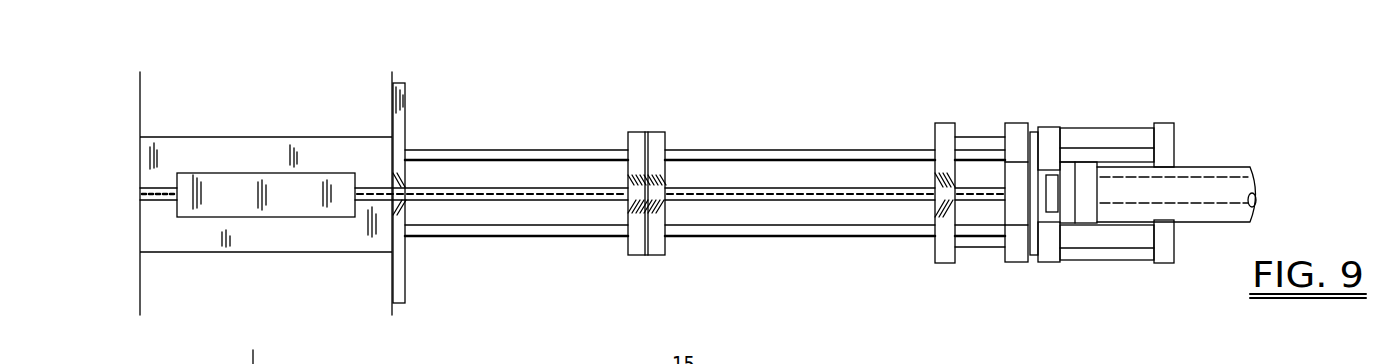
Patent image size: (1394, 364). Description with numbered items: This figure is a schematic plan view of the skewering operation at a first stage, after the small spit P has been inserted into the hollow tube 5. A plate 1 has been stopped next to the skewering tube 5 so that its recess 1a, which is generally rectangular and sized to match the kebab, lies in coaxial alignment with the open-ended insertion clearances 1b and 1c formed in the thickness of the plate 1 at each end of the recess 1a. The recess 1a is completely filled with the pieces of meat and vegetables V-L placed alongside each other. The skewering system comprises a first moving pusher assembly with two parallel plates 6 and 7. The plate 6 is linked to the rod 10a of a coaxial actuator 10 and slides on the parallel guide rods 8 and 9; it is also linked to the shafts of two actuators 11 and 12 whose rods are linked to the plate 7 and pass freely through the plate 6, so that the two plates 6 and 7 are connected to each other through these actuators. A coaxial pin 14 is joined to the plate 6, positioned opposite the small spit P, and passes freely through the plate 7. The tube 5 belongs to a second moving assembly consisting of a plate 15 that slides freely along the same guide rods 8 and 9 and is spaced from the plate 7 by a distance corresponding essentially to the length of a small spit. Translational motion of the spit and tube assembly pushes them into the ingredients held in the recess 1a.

The plate 1 is at (271, 193).
The recess 1a is at (242, 208).
The open-ended clearance 1b is at (360, 187).
The open-ended clearance 1c is at (157, 190).
The pieces of meat and vegetables V-L is at (220, 185).
The hollow tube 5 is at (540, 193).
The small spit P is at (680, 195).
The guide rod 8 is at (783, 158).
The guide rod 9 is at (720, 237).
The plate 15 is at (659, 123).
The plate 7 is at (940, 123).
The coaxial pin 14 is at (958, 200).
The plate 6 is at (1013, 123).
The rod 10a is at (1042, 217).
The actuator 11 is at (1131, 121).
The actuator 12 is at (1132, 263).
The coaxial actuator 10 is at (1259, 157).